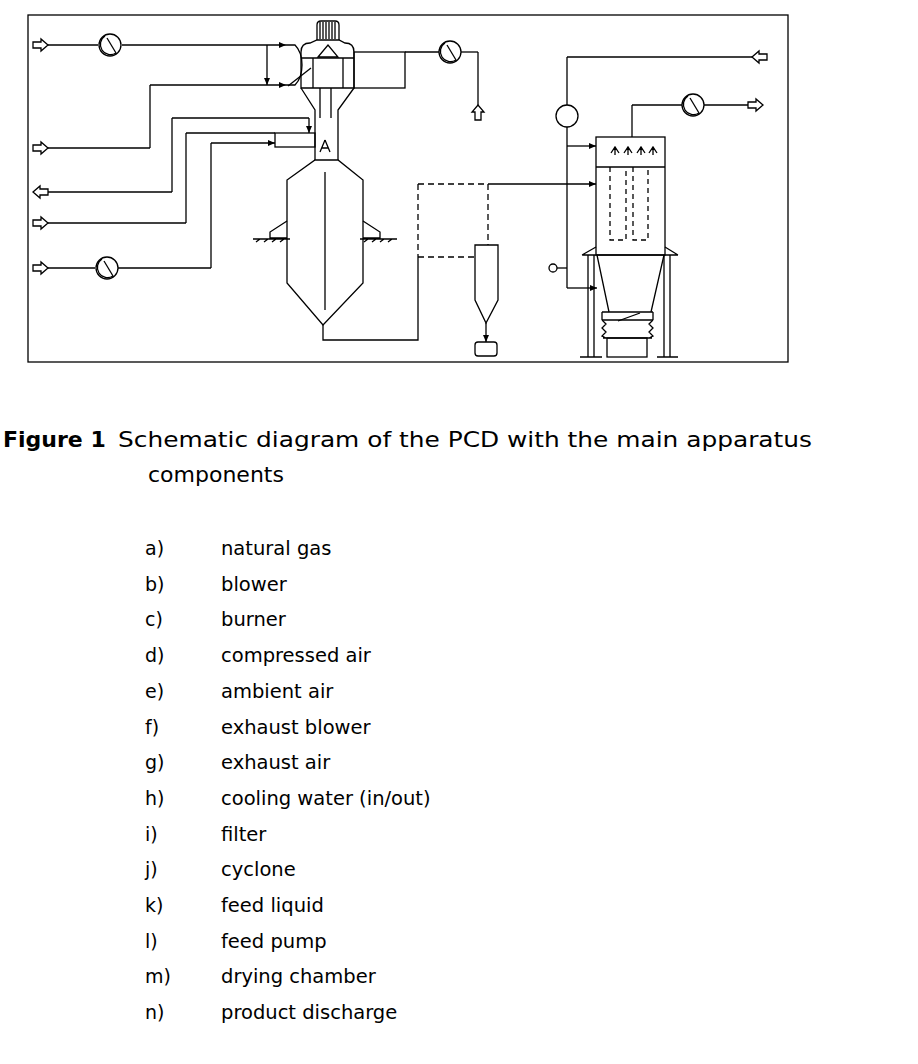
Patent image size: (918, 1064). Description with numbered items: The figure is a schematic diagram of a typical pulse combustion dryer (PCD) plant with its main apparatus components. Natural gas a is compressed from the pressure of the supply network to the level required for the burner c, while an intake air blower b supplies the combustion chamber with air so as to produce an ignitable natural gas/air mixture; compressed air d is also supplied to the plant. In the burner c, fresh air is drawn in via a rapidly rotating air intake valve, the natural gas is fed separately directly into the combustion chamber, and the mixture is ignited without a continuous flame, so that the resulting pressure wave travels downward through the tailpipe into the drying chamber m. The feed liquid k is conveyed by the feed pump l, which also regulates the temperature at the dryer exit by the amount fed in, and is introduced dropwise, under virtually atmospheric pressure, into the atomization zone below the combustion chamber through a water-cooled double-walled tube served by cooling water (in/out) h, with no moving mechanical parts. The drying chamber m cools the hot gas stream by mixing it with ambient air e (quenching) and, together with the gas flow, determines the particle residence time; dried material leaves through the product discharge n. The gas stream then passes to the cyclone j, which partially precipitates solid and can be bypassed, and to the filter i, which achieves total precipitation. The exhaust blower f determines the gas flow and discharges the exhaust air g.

The natural gas a is at (65, 58).
The blower b is at (288, 56).
The burner c is at (345, 88).
The compressed air d is at (400, 161).
The ambient air e is at (479, 94).
The exhaust blower f is at (690, 117).
The exhaust air g is at (756, 119).
The cooling water (in/out) h is at (174, 173).
The filter i is at (555, 247).
The cyclone j is at (462, 270).
The feed liquid k is at (64, 283).
The feed pump l is at (184, 223).
The drying chamber m is at (319, 232).
The product discharge n is at (380, 302).